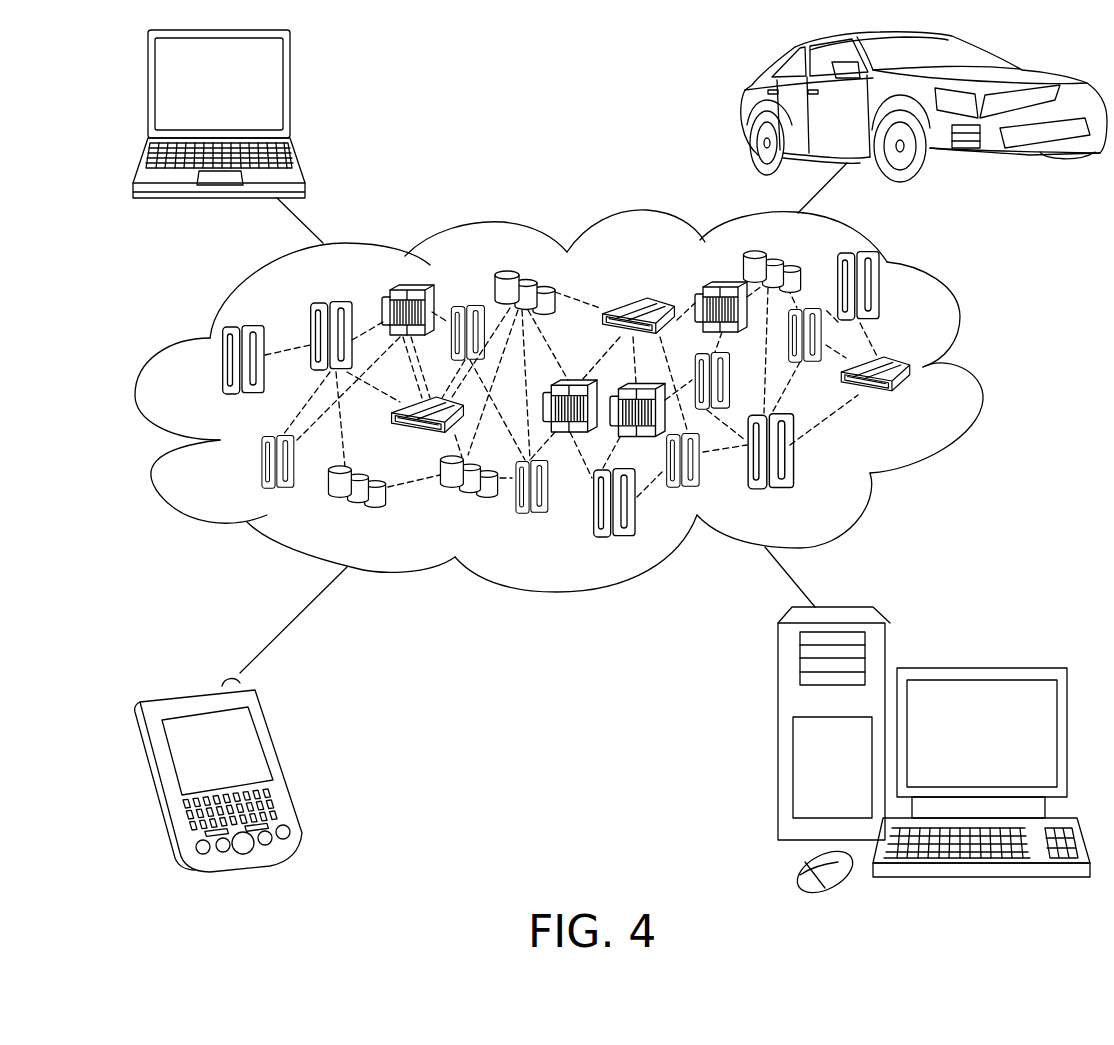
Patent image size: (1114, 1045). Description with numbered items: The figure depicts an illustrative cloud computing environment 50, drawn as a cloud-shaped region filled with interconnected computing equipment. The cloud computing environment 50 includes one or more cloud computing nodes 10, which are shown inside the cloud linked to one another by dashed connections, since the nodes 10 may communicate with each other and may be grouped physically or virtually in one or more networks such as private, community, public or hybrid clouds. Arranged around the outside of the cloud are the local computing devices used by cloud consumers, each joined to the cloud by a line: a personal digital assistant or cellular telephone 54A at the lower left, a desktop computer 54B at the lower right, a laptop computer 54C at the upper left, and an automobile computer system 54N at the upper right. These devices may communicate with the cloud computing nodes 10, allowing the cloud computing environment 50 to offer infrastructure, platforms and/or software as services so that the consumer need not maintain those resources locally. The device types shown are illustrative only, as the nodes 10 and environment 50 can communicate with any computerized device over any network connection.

The cloud computing environment 50 is at (978, 373).
The cloud computing node 10 is at (920, 405).
The personal digital assistant or cellular telephone 54A is at (283, 765).
The desktop computer 54B is at (980, 668).
The laptop computer 54C is at (297, 97).
The automobile computer system 54N is at (750, 110).